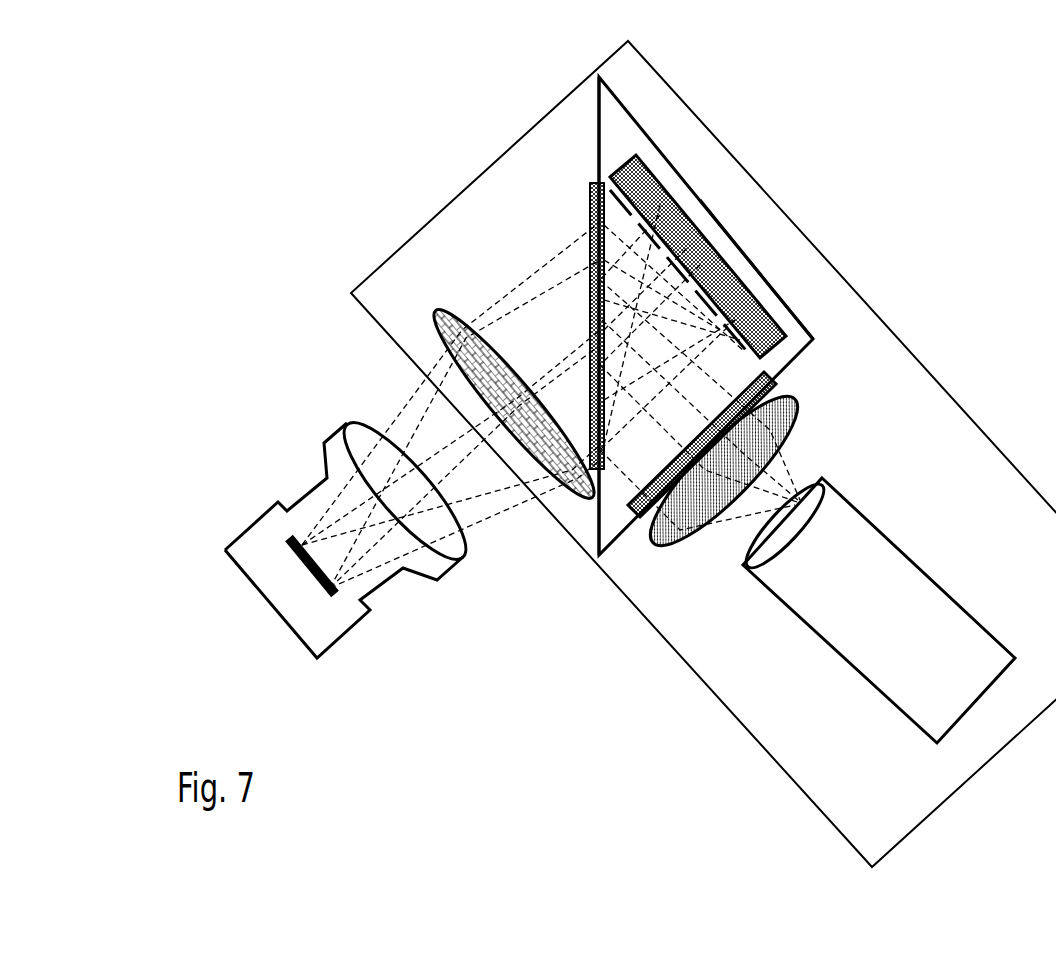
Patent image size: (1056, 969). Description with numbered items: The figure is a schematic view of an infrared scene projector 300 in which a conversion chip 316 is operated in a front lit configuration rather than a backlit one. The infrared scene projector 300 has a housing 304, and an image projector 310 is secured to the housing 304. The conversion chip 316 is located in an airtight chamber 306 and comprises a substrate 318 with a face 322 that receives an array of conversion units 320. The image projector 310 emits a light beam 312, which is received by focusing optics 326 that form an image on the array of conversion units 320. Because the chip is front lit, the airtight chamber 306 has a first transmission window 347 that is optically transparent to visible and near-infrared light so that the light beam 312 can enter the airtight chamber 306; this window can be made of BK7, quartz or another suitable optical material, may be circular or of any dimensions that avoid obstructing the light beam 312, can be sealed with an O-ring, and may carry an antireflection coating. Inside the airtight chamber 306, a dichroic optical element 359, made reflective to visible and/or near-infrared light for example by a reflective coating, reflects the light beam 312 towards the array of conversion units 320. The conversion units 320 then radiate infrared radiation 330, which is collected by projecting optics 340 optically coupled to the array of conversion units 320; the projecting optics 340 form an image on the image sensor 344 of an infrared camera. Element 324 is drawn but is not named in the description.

The infrared scene projector 300 is at (940, 258).
The housing 304 is at (1018, 468).
The airtight chamber 306 is at (648, 250).
The image projector 310 is at (918, 562).
The light beam 312 is at (786, 480).
The conversion chip 316 is at (757, 290).
The substrate 318 is at (698, 256).
The array of conversion units 320 is at (668, 255).
The face 322 is at (599, 183).
The sample layer 324 is at (742, 327).
The focusing optics 326 is at (800, 398).
The infrared radiation 330 is at (522, 284).
The projecting optics 340 is at (438, 312).
The image sensor 344 is at (290, 552).
The first transmission window 347 is at (778, 380).
The dichroic optical element 359 is at (592, 200).